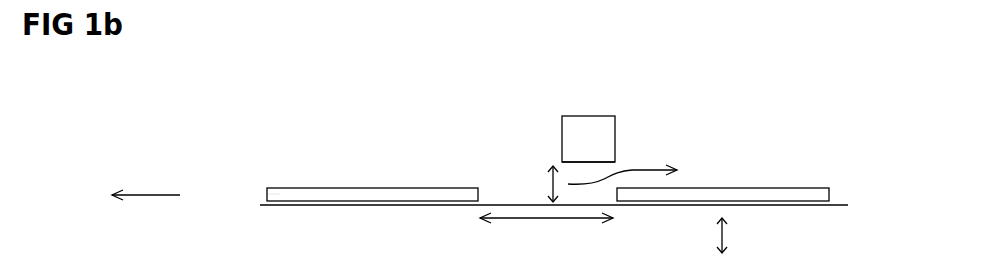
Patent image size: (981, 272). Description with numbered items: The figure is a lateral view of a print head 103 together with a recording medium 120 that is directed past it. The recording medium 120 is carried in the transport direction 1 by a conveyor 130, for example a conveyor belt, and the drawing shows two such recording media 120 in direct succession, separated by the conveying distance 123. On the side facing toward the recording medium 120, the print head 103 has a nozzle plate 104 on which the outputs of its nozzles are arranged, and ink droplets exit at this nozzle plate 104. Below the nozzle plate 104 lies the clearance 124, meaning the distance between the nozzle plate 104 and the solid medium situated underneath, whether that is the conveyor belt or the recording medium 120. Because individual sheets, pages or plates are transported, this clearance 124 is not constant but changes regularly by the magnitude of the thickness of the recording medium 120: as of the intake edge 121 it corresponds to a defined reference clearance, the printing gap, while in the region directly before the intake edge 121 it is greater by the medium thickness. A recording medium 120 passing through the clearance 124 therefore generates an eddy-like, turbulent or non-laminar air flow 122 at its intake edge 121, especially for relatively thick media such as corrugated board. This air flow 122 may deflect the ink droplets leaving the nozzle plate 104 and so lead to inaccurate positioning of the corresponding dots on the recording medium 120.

The transport direction 1 is at (142, 195).
The print head 103 is at (562, 117).
The nozzle plate 104 is at (562, 162).
The recording medium 120 is at (302, 186).
The intake edge 121 is at (277, 195).
The air flow 122 is at (647, 170).
The conveying distance 123 is at (543, 222).
The clearance 124 is at (548, 181).
The conveyor 130 is at (410, 203).